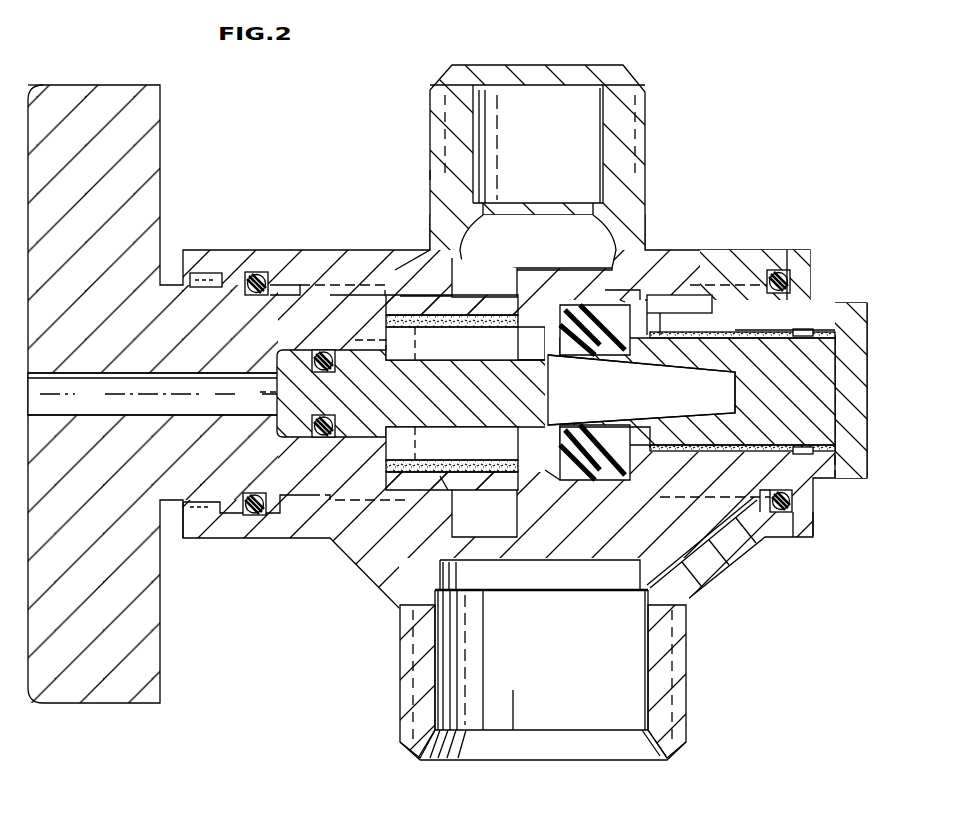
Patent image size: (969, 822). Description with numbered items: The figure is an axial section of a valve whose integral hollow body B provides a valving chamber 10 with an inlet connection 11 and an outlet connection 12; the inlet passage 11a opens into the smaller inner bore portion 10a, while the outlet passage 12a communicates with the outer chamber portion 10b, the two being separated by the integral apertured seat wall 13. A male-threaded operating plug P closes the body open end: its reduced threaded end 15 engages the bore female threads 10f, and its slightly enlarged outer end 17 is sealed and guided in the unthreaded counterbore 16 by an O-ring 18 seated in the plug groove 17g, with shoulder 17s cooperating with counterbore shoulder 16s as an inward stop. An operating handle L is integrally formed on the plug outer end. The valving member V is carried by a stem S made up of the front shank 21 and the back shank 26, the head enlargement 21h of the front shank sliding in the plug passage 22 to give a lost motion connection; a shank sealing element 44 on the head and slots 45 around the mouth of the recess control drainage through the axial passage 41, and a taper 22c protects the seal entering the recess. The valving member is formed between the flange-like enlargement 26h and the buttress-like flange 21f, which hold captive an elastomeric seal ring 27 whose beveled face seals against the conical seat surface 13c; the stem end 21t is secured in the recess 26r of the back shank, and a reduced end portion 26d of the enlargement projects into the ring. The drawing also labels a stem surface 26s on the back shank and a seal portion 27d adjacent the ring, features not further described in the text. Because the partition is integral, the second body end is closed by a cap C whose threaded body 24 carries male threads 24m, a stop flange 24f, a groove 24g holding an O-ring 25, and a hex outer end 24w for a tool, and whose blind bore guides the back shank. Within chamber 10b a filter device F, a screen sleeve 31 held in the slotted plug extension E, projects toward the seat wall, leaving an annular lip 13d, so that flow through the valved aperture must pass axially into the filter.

The valving chamber 10 is at (506, 290).
The inner valving chamber bore portion 10a is at (600, 262).
The outer valve chamber portion 10b is at (484, 397).
The bore female threads 10f is at (420, 298).
The inlet connection 11 is at (688, 690).
The inlet passage 11a is at (702, 542).
The outlet connection 12 is at (645, 100).
The outlet passage 12a is at (538, 241).
The apertured seat wall 13 is at (530, 282).
The conical valve seat surface 13c is at (580, 484).
The annular lip 13d is at (452, 332).
The male-threaded plug end 15 is at (322, 295).
The unthreaded counterbore 16 is at (195, 512).
The counterbore shoulder 16s is at (268, 514).
The plug outer end 17 is at (250, 516).
The circumferential plug groove 17g is at (272, 296).
The shoulder 17s is at (286, 500).
The O-ring 18 is at (252, 272).
The stem outer shank portion 21 is at (418, 392).
The buttress-like circumferential flange 21f is at (520, 343).
The cylindrical head enlargement 21h is at (253, 392).
The stem end 21t is at (700, 418).
The female axial plug passage 22 is at (300, 348).
The taper 22c is at (452, 343).
The male threaded body 24 is at (808, 295).
The stop flange 24f is at (813, 525).
The circumferential groove 24g is at (792, 497).
The male threads 24m is at (740, 328).
The squared or hex outer end 24w is at (855, 308).
The O-ring 25 is at (795, 505).
The stem back shank 26 is at (778, 270).
The reduced cylindrical end portion 26d is at (598, 358).
The flange-like stem enlargement 26h is at (650, 300).
The recess 26r is at (698, 410).
The rotor surface 26s is at (636, 312).
The seal ring 27 is at (545, 447).
The piston drive element 27d is at (614, 480).
The screen sleeve 31 is at (445, 476).
The axial passage 41 is at (153, 394).
The shank sealing element 44 is at (318, 348).
The slots 45 is at (365, 345).
The hollow body B is at (412, 165).
The closure plug cap C is at (815, 250).
The plug extension E is at (482, 485).
The filter screen device F is at (398, 292).
The operating handle L is at (108, 85).
The valve operating plug P is at (210, 290).
The stem S is at (345, 296).
The valving member V is at (626, 300).